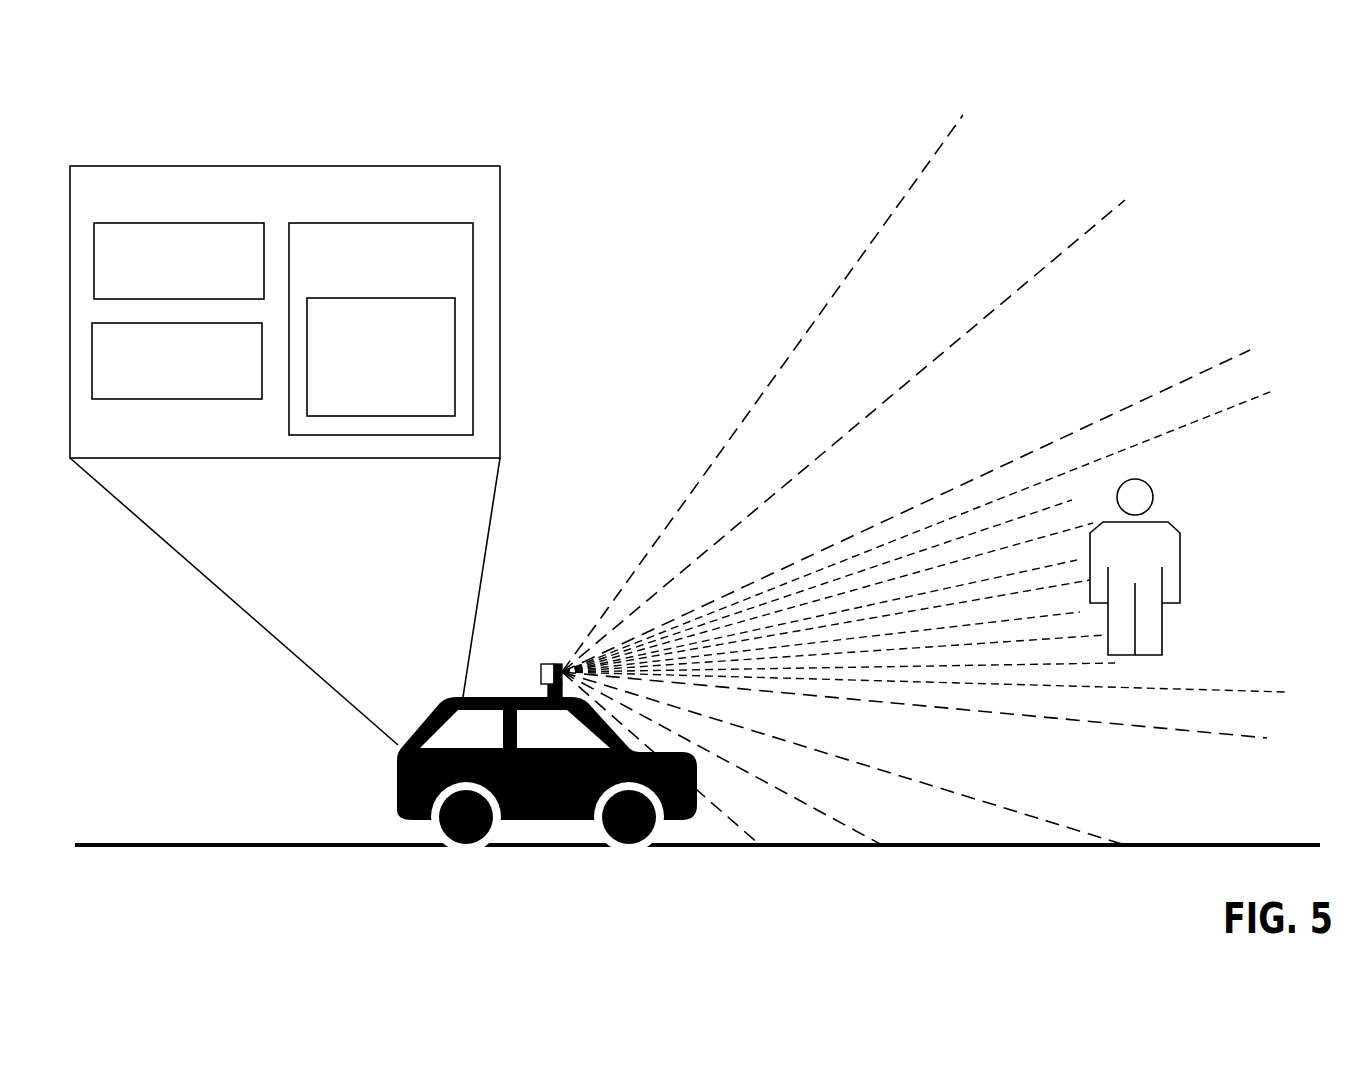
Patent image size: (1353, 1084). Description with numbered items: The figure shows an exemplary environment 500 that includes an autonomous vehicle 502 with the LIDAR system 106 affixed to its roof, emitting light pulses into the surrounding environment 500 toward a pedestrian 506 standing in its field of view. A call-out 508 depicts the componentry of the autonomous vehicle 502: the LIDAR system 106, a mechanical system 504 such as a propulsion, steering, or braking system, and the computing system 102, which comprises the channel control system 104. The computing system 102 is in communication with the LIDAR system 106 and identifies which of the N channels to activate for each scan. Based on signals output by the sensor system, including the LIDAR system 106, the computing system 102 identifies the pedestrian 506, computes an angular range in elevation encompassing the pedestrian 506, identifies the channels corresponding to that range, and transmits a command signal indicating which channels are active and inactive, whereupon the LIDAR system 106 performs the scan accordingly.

The environment 500 is at (238, 98).
The call-out 508 is at (285, 455).
The LIDAR system 106 is at (552, 665).
The mechanical system 504 is at (177, 361).
The computing system 102 is at (473, 303).
The channel control system 104 is at (453, 367).
The autonomous vehicle 502 is at (398, 773).
The pedestrian 506 is at (1183, 542).